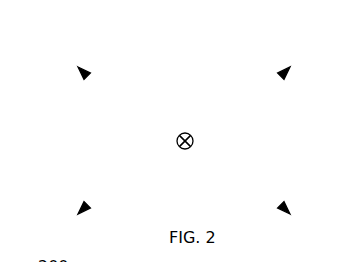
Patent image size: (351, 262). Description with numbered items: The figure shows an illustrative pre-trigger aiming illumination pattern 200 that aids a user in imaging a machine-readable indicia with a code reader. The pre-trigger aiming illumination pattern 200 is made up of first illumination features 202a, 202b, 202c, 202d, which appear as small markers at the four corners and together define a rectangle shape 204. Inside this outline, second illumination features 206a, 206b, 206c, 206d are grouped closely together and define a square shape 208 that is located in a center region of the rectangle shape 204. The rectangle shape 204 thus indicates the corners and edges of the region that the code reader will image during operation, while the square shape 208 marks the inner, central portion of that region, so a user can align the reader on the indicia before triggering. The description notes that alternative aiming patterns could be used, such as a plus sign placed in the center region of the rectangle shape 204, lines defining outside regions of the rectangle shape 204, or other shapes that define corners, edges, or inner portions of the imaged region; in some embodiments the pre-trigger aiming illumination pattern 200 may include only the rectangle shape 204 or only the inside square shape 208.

The pre-trigger aiming illumination pattern 200 is at (184, 43).
The first illumination feature 202a is at (69, 67).
The first illumination feature 202b is at (276, 61).
The first illumination feature 202c is at (69, 203).
The first illumination feature 202d is at (276, 209).
The rectangle shape 204 is at (88, 143).
The second illumination feature 206a is at (169, 127).
The second illumination feature 206b is at (184, 125).
The second illumination feature 206c is at (169, 139).
The second illumination feature 206d is at (185, 139).
The square shape 208 is at (190, 163).